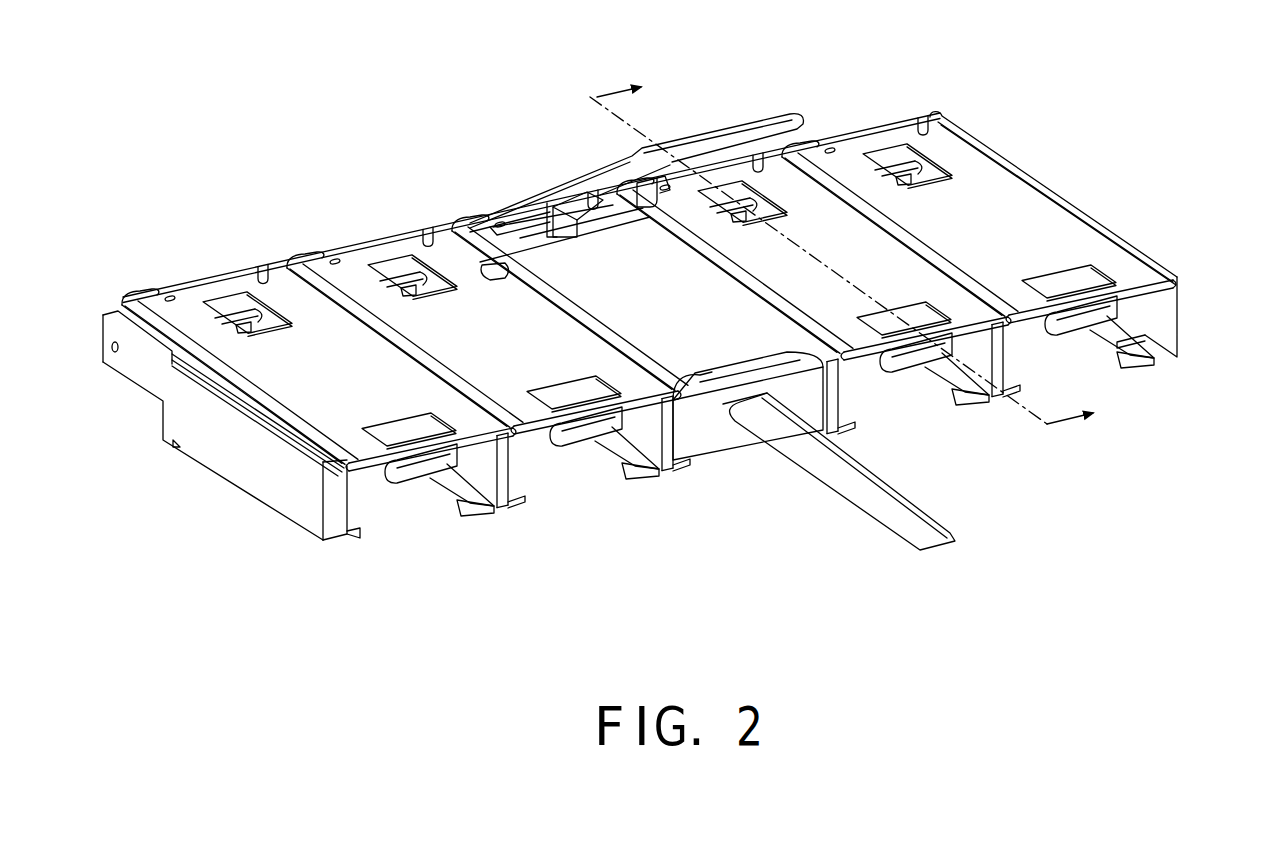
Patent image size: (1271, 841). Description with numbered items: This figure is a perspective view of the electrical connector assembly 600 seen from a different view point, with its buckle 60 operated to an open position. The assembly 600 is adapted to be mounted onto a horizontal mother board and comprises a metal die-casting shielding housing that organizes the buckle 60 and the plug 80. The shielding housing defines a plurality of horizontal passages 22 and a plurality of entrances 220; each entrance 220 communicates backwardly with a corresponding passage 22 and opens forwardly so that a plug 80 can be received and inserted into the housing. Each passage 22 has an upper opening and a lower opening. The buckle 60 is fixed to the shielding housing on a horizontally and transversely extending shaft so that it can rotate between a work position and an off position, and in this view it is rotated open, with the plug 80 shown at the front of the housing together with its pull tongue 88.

The electrical connector assembly 600 is at (659, 332).
The passage 22 is at (484, 448).
The entrance 220 is at (518, 503).
The buckle 60 is at (760, 162).
The plug 80 is at (712, 423).
The pull tongue 88 is at (873, 497).